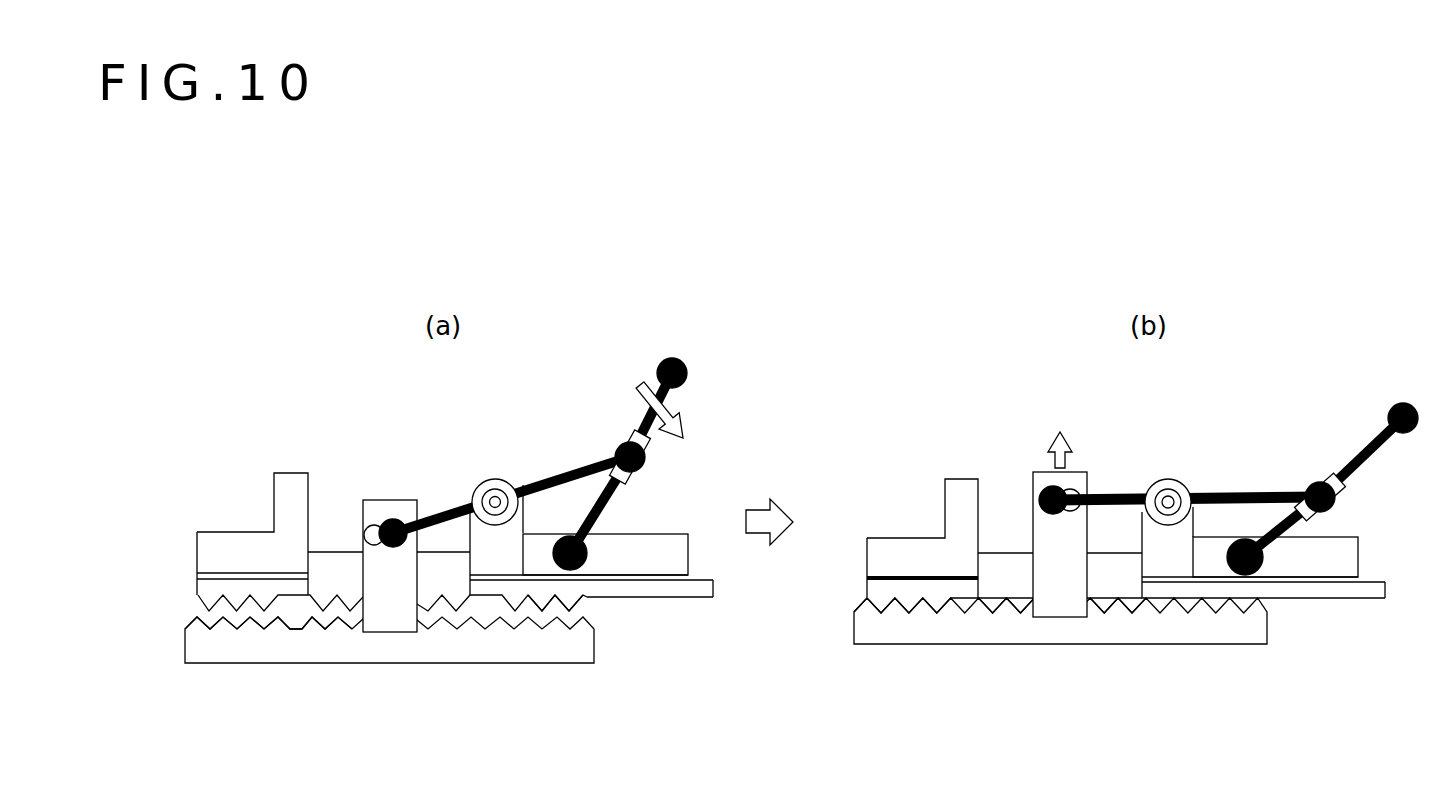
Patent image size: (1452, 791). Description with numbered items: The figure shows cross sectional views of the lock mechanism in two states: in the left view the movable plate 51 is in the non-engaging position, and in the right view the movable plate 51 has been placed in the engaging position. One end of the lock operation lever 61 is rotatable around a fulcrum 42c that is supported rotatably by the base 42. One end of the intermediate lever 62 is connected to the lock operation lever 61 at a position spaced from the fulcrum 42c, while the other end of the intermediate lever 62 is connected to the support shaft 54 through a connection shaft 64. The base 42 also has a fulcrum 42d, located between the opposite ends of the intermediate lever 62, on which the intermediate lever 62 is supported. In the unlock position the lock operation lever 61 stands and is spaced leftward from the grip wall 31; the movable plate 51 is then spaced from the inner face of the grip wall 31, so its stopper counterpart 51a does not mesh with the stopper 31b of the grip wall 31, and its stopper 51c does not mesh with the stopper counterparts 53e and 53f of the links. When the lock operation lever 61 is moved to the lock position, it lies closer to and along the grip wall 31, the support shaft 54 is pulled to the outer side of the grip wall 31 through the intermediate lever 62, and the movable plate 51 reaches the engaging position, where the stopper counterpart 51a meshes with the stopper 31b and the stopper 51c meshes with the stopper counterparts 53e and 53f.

The grip wall 31 is at (712, 590).
The stopper 31b is at (212, 602).
The base 42 is at (660, 545).
The fulcrum 42c is at (583, 562).
The fulcrum 42d is at (495, 496).
The movable plate 51 is at (476, 655).
The stopper counterpart 51a is at (253, 625).
The stopper 51c is at (337, 623).
The stopper counterpart 53e is at (432, 613).
The stopper counterpart 53f is at (785, 653).
The support shaft 54 is at (402, 498).
The lock operation lever 61 is at (603, 500).
The intermediate lever 62 is at (551, 482).
The connection shaft 64 is at (380, 520).